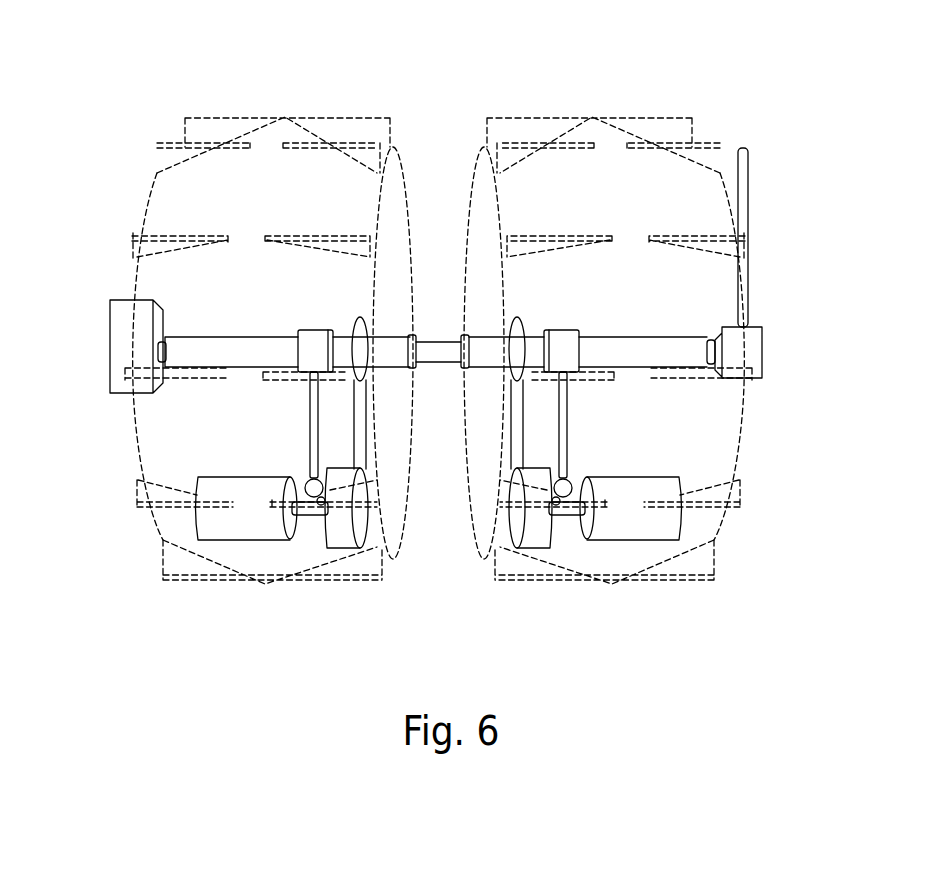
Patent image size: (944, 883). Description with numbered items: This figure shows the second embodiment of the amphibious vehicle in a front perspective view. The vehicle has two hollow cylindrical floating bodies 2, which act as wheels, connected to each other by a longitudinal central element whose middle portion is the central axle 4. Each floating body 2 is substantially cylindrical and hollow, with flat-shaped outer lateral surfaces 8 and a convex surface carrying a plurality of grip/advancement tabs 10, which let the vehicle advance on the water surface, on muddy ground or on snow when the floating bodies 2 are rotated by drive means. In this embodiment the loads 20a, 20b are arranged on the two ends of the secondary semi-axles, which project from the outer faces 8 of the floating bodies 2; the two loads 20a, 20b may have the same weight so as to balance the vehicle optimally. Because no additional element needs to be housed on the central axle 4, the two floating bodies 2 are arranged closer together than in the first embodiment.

The hollow cylindrical floating body 2 is at (279, 88).
The central axle 4 is at (427, 340).
The flat-shaped outer lateral surface 8 is at (133, 447).
The grip/advancement tab 10 is at (197, 118).
The load 20a is at (110, 352).
The load 20b is at (762, 347).